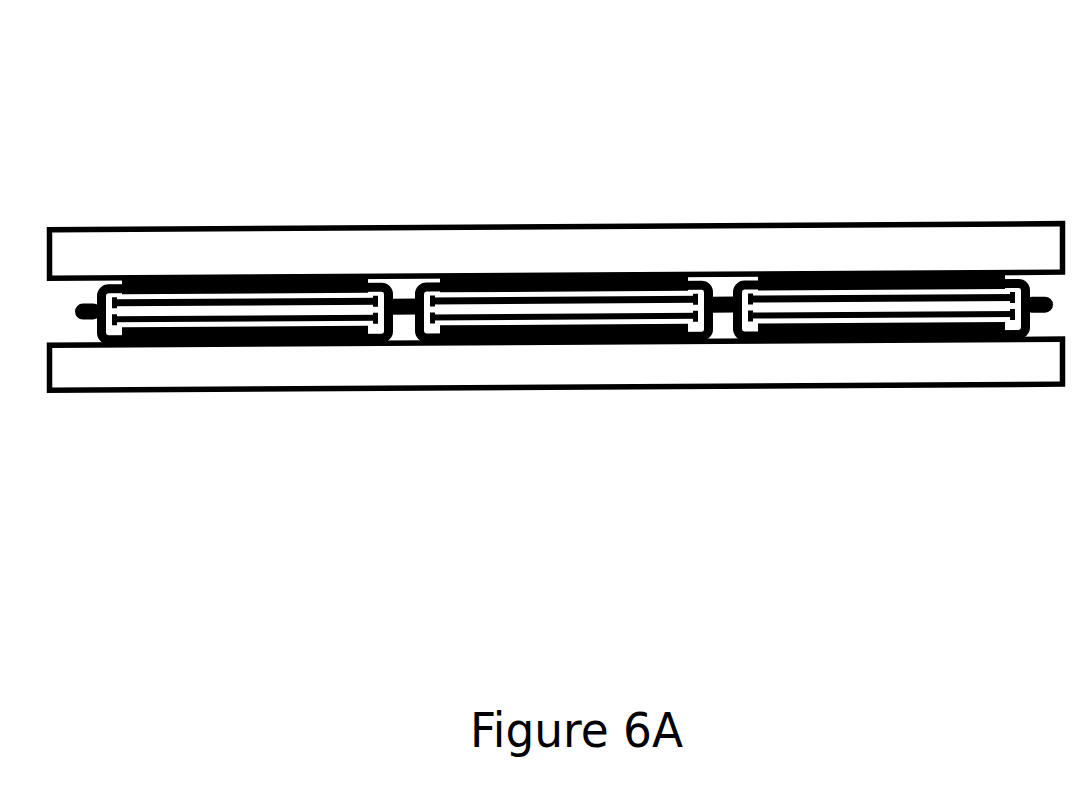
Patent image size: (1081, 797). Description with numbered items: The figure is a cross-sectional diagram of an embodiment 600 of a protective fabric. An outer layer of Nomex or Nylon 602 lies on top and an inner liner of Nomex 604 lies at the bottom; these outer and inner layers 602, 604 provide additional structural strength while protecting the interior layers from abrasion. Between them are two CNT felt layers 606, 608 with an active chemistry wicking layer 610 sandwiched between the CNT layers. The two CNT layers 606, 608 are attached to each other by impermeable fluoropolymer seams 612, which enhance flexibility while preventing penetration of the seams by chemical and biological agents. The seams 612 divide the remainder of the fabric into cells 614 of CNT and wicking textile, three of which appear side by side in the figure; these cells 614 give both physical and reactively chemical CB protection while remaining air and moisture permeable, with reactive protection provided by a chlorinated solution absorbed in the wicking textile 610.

The embodiment 600 is at (178, 105).
The outer layer of Nomex or Nylon 602 is at (270, 230).
The inner liner of Nomex 604 is at (273, 393).
The CNT felt layer 606 is at (895, 272).
The CNT felt layer 608 is at (877, 340).
The active chemistry wicking layer 610 is at (788, 307).
The fluoropolymer seam 612 is at (725, 318).
The cell 614 is at (565, 248).